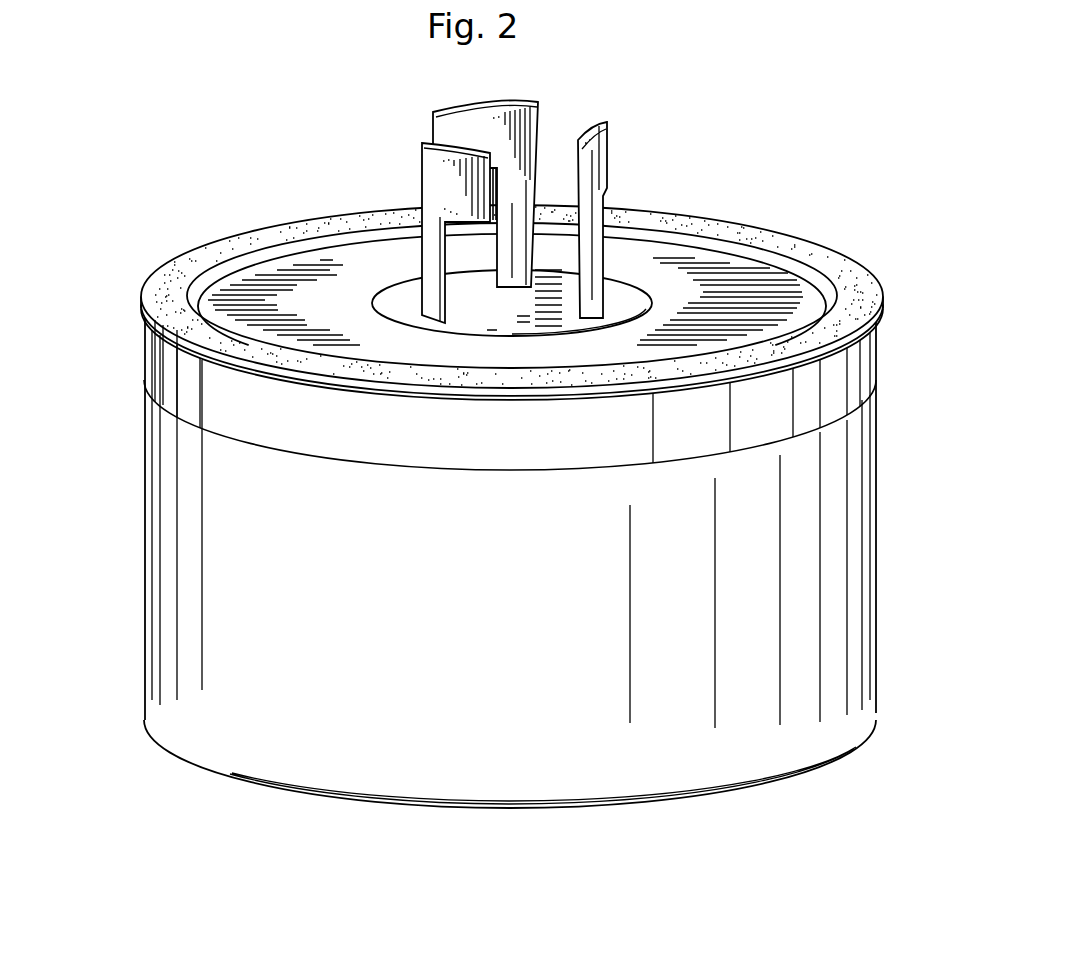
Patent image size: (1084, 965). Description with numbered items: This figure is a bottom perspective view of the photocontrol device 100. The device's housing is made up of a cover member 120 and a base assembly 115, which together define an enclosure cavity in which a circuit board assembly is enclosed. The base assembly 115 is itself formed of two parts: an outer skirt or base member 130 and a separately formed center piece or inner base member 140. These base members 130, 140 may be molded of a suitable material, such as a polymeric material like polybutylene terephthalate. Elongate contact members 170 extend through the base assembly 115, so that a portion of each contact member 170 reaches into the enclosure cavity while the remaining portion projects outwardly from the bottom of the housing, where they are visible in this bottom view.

The photocontrol device 100 is at (716, 89).
The base assembly 115 is at (746, 218).
The cover member 120 is at (197, 610).
The outer skirt or base member 130 is at (808, 295).
The center piece or inner base member 140 is at (400, 300).
The elongate contact members 170 is at (447, 122).